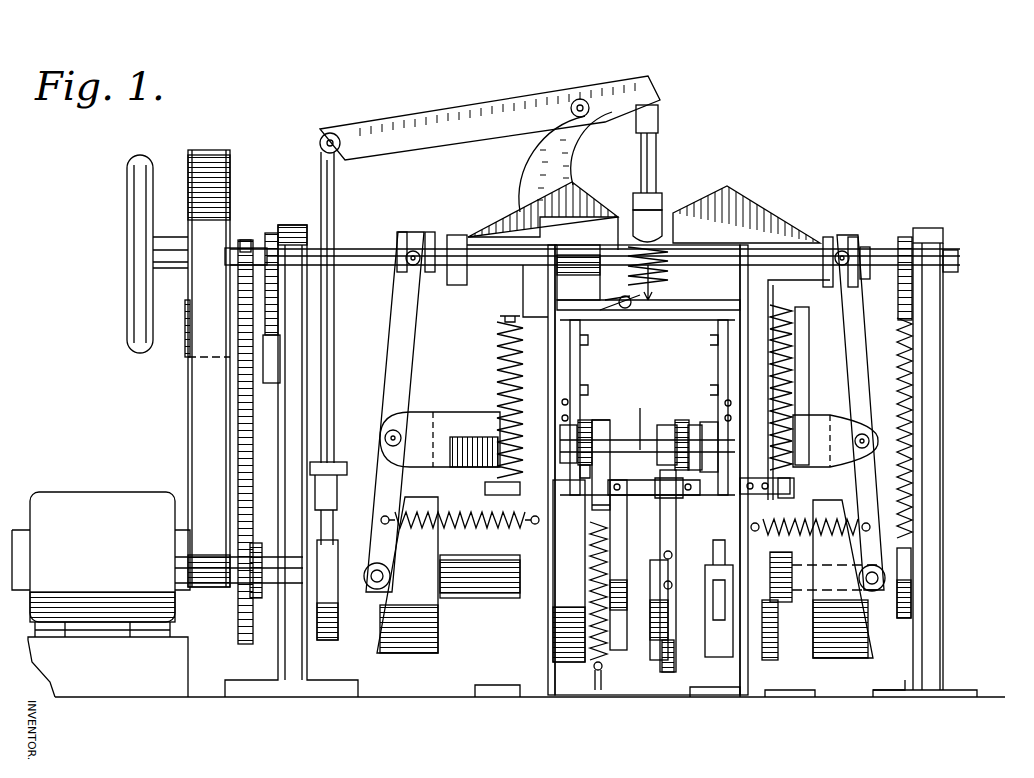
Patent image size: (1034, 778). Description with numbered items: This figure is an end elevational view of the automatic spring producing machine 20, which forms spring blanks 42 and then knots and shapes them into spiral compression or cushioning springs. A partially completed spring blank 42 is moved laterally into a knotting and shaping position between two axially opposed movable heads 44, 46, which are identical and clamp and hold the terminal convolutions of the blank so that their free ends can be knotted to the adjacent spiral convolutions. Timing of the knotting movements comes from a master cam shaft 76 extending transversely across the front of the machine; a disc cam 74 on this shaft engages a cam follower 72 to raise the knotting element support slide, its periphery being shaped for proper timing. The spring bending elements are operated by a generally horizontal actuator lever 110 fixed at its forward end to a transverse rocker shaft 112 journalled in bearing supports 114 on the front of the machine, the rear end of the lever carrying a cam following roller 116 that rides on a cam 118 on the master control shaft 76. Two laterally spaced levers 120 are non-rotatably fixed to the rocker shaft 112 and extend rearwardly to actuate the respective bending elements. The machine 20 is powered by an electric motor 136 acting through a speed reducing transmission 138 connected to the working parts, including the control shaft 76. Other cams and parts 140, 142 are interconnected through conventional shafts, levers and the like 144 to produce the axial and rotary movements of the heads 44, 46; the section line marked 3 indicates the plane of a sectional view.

The section line 3- 3 is at (688, 156).
The automatic spring producing machine 20 is at (776, 175).
The spring blank 42 is at (650, 305).
The movable head 44 is at (698, 238).
The movable head 46 is at (628, 215).
The cam follower 72 is at (700, 460).
The disc cam 74 is at (668, 675).
The master cam shaft 76 is at (482, 590).
The actuator lever 110 is at (622, 440).
The rocker shaft 112 is at (640, 440).
The bearing support 114 is at (568, 430).
The cam following roller 116 is at (638, 500).
The cam 118 is at (618, 628).
The lever 120 is at (590, 425).
The electric motor 136 is at (75, 505).
The speed reducing transmission 138 is at (225, 160).
The cam 140 is at (375, 655).
The cam 142 is at (340, 620).
The shafts, levers and the like 144 is at (391, 306).